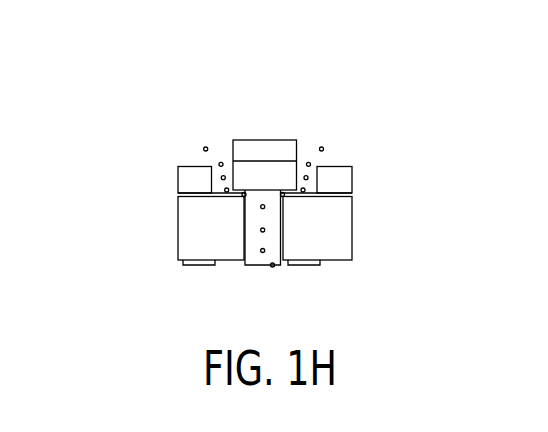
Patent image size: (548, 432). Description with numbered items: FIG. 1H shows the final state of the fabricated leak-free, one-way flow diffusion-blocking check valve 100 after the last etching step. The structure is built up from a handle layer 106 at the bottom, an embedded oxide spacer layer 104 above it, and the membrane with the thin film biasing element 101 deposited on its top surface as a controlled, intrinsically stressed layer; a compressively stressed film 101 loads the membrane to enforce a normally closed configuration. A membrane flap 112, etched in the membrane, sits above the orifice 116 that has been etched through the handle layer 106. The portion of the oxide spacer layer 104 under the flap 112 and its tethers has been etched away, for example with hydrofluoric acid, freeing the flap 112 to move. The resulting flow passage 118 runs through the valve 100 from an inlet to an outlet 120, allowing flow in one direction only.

The one-way flow diffusion-blocking check valve 100 is at (138, 90).
The thin film biasing element 101 is at (239, 152).
The embedded oxide spacer layer 104 is at (352, 197).
The handle layer 106 is at (345, 242).
The membrane flap 112 is at (297, 165).
The orifice 116 is at (260, 257).
The flow passage 118 is at (257, 261).
The outlet 120 is at (228, 143).